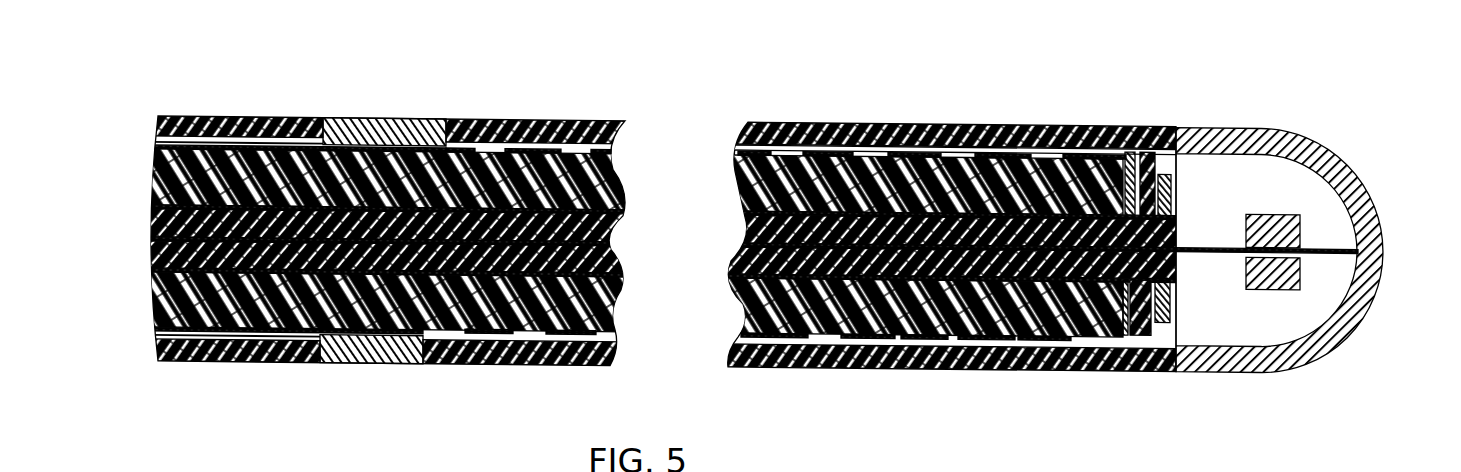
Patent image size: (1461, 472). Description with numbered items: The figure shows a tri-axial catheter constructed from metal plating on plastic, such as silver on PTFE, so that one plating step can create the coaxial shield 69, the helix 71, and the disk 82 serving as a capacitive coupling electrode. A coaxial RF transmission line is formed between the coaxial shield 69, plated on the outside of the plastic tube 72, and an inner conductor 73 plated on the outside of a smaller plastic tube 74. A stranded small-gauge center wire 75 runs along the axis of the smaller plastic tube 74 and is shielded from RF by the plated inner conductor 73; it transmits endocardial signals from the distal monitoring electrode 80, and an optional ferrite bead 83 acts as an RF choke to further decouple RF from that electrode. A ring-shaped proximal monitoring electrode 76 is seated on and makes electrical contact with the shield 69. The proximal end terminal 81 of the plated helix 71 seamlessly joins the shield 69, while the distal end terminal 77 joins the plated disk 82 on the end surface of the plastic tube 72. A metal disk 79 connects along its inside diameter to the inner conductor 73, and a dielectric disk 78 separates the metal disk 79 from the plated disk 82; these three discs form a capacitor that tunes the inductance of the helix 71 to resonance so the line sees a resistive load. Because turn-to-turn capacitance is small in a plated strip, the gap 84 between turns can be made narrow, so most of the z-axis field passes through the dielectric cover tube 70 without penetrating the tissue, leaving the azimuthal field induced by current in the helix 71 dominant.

The coaxial shield 69 is at (153, 140).
The dielectric cover tube 70 is at (172, 119).
The helix 71 is at (735, 140).
The plastic tube 72 is at (160, 173).
The inner conductor 73 is at (610, 203).
The smaller plastic tube 74 is at (157, 243).
The center wire 75 is at (610, 237).
The proximal monitoring electrode 76 is at (353, 110).
The distal end terminal 77 is at (1116, 148).
The dielectric disk 78 is at (1150, 150).
The metal disk 79 is at (1163, 180).
The distal monitoring electrode 80 is at (1372, 208).
The proximal end terminal 81 is at (441, 113).
The plated disk 82 is at (1117, 330).
The ferrite bead 83 is at (1256, 283).
The gap 84 is at (778, 140).